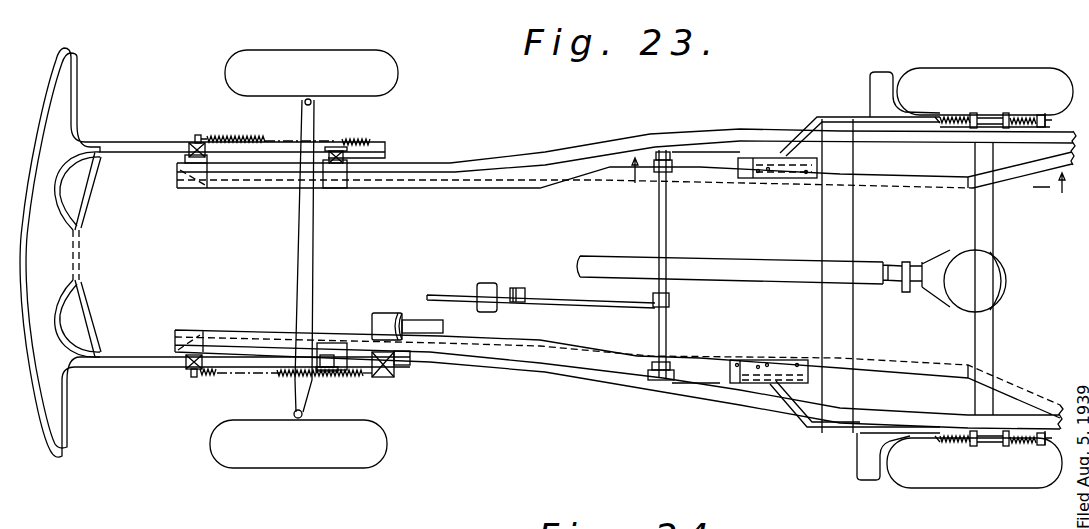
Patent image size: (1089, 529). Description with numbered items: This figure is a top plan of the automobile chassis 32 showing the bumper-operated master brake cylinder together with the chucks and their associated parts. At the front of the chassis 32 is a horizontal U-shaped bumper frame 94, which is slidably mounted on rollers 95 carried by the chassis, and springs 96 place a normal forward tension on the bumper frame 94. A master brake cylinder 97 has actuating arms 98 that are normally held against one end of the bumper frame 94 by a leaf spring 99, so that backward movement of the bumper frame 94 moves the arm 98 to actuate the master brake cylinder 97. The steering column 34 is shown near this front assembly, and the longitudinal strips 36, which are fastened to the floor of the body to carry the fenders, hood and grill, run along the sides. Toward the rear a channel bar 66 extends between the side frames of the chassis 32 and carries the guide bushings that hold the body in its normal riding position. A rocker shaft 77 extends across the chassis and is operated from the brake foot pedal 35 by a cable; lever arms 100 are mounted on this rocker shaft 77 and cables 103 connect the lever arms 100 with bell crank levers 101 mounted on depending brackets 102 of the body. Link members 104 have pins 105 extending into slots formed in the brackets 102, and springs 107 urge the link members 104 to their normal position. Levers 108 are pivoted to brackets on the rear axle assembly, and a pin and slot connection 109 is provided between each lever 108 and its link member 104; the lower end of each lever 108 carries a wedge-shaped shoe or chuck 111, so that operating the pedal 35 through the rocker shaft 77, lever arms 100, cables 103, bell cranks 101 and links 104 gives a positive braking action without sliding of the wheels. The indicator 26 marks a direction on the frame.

The frame side member direction 26 is at (842, 187).
The chassis 32 is at (750, 133).
The steering column 34 is at (415, 320).
The brake pedal 35 is at (520, 290).
The longitudinal strips 36 is at (488, 182).
The channel bar 66 is at (853, 317).
The rocker shaft 77 is at (660, 220).
The bumper frame 94 is at (103, 356).
The rollers 95 is at (190, 147).
The springs 96 is at (355, 145).
The master brake cylinder 97 is at (380, 385).
The actuating arms 98 is at (541, 292).
The leaf spring 99 is at (405, 362).
The lever arms 100 is at (667, 148).
The bell crank levers 101 is at (795, 173).
The depending brackets 102 is at (785, 170).
The cables 103 is at (713, 168).
The link members 104 is at (830, 117).
The pins 105 is at (755, 178).
The springs 107 is at (942, 117).
The levers 108 is at (910, 118).
The pin and slot connection 109 is at (983, 115).
The chuck 111 is at (880, 75).